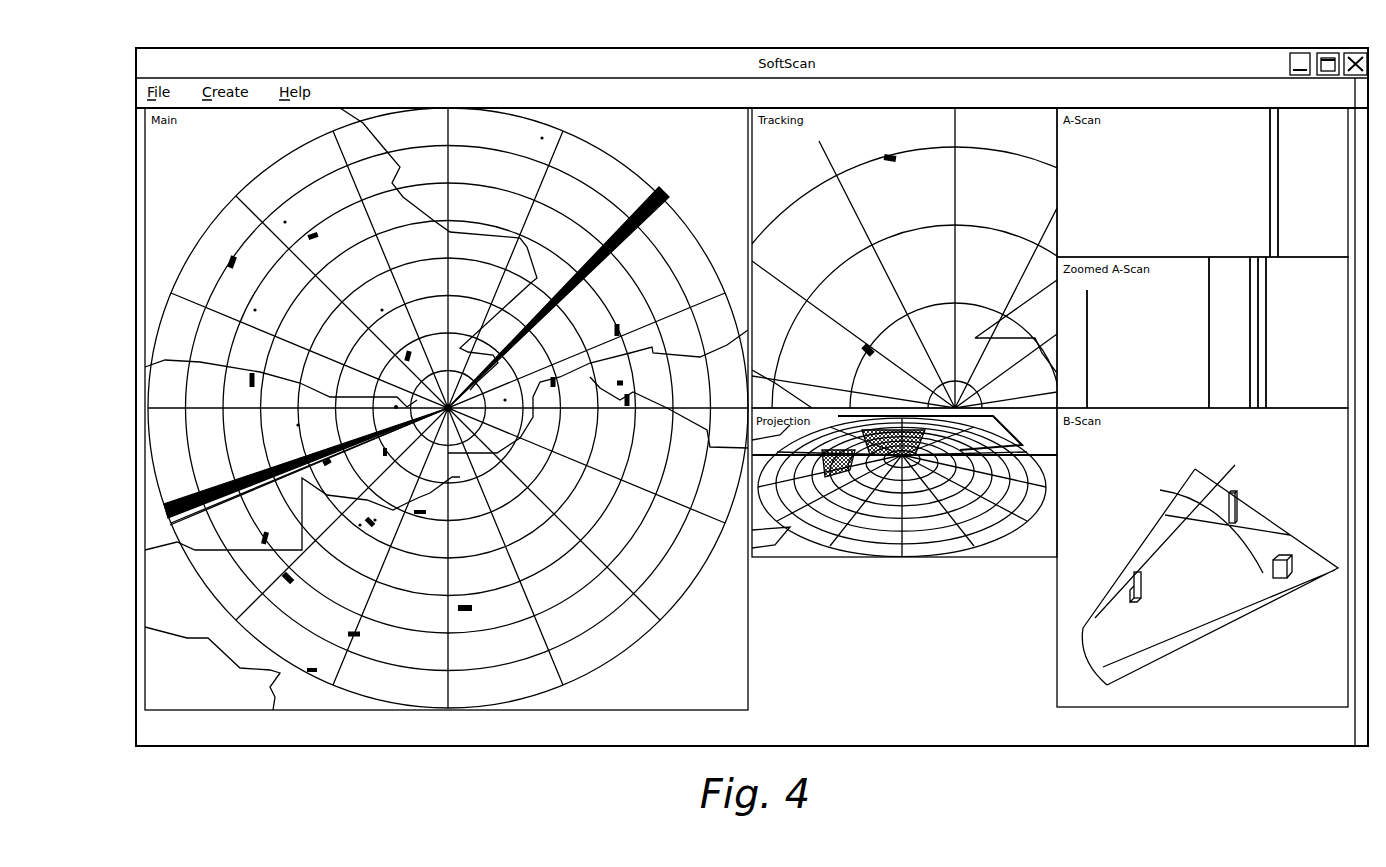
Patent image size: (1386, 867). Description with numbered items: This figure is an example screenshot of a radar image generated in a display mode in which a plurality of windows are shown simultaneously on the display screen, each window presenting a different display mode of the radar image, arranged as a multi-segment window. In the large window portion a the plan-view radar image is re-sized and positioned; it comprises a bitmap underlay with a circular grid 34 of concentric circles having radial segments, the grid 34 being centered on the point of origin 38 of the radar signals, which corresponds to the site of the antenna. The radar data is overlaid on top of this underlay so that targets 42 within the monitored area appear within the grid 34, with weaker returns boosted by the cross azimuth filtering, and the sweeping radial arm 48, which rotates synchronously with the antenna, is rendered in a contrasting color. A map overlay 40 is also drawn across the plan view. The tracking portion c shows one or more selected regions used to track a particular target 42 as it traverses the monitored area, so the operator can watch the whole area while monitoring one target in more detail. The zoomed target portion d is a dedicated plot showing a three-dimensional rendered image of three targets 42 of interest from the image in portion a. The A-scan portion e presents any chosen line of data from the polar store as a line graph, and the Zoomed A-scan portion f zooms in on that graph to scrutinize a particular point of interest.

The circular grid 34 is at (632, 648).
The point of origin 38 is at (462, 352).
The coastline map overlay 40 is at (390, 138).
The targets 42 is at (330, 245).
The sweeping radial arm 48 is at (668, 190).
The portion of the multi-segment window a is at (805, 557).
The tracking region portion c is at (930, 108).
The zoomed target portion d is at (1057, 650).
The A-scan portion e is at (1200, 108).
The Zoomed A-scan portion f is at (1140, 257).